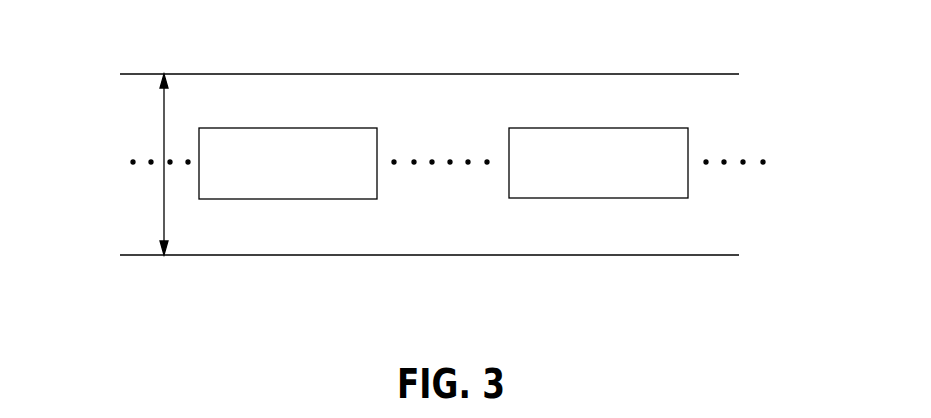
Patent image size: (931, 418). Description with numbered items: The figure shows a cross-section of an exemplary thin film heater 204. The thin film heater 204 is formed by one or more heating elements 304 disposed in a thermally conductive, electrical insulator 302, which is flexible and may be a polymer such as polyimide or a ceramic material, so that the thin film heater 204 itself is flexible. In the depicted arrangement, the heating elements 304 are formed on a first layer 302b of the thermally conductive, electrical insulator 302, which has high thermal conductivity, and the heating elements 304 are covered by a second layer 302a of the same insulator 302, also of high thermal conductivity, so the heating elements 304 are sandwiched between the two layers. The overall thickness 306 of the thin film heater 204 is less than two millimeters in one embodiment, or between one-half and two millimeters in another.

The thin film heater 204 is at (88, 37).
The thermally conductive, electrical insulator 302 is at (140, 137).
The second layer 302a is at (708, 138).
The first layer 302b is at (708, 241).
The heating element 304 is at (293, 170).
The thickness 306 is at (164, 220).